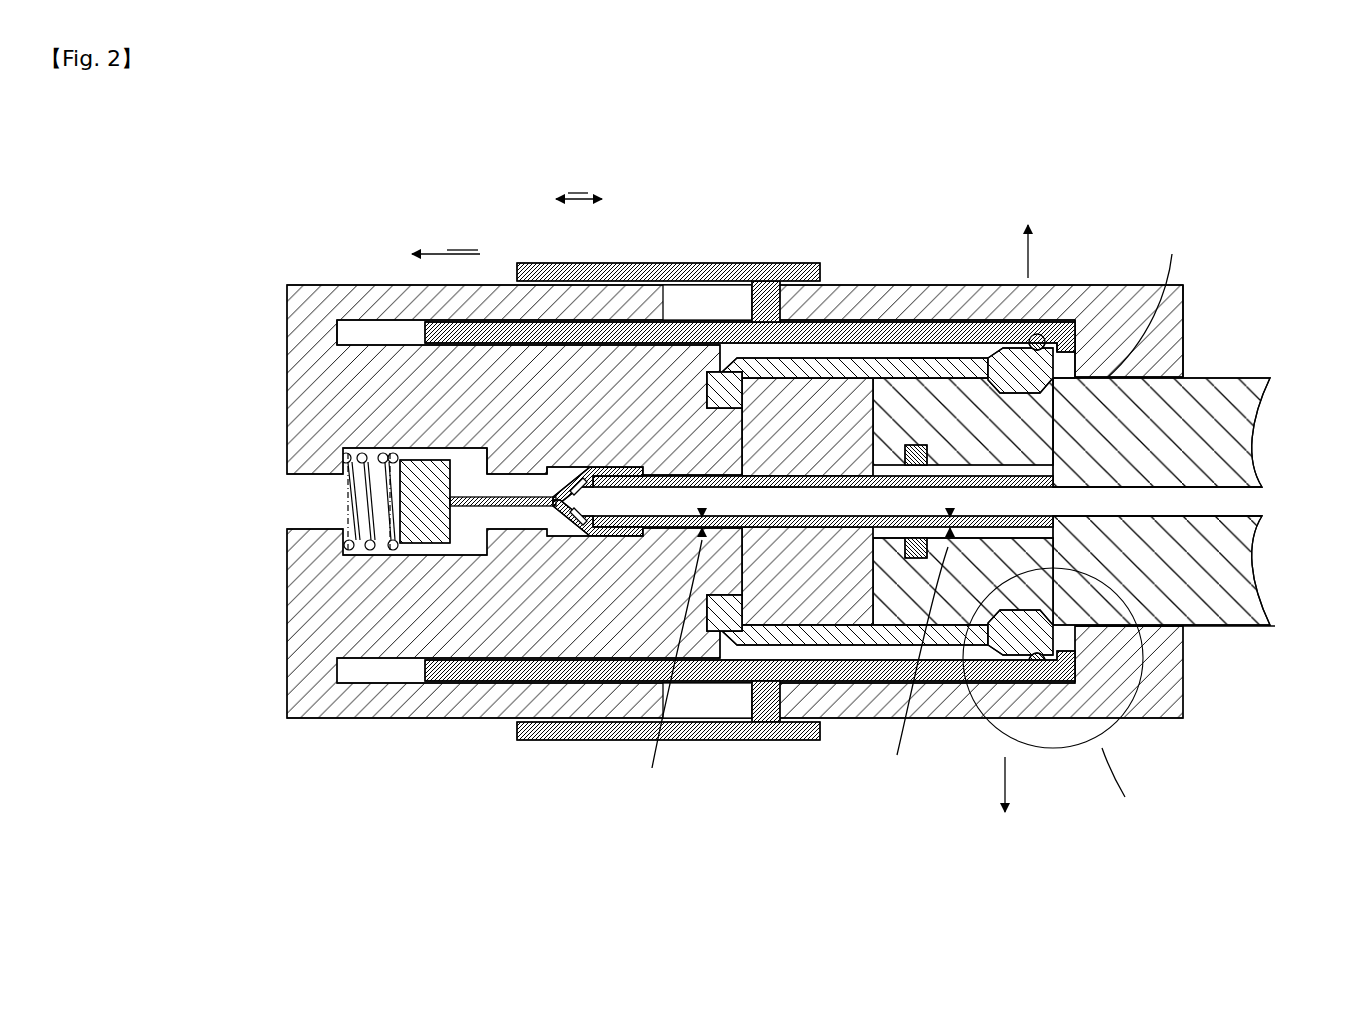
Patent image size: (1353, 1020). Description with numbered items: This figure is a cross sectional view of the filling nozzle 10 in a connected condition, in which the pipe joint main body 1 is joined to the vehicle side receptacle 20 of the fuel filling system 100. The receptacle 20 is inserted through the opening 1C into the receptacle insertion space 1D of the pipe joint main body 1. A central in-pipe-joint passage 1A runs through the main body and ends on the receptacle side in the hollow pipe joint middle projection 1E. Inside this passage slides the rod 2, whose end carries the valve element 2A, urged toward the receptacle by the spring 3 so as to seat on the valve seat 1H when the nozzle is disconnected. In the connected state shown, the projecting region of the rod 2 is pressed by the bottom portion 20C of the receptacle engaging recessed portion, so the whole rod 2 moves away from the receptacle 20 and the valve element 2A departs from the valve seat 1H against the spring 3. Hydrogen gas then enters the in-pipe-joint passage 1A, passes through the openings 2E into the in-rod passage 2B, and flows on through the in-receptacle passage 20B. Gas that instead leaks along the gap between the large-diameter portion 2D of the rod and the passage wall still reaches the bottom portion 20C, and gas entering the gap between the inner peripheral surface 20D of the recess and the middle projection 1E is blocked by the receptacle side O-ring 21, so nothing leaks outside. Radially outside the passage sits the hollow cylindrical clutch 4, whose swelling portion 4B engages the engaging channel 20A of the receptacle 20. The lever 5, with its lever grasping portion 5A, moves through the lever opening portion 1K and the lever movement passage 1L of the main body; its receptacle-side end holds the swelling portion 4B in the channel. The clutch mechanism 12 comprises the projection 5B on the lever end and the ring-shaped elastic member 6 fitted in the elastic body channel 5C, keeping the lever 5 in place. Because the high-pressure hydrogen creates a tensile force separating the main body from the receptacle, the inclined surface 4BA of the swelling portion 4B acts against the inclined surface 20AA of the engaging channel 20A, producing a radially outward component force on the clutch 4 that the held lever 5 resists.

The piping system 100 is at (1208, 227).
The filling nozzle 10 is at (346, 212).
The pipe joint main body 1 is at (724, 476).
The in-pipe-joint passage 1A is at (553, 483).
The opening 1C is at (1152, 378).
The receptacle insertion space 1D is at (1185, 580).
The pipe joint middle projection 1E is at (980, 470).
The valve seat 1H is at (487, 462).
The lever opening portion 1K is at (663, 302).
The lever movement passage 1L is at (387, 325).
The rod 2 is at (746, 528).
The valve element 2A is at (430, 506).
The in-rod passage 2B is at (796, 496).
The large-diameter portion 2D is at (760, 483).
The openings 2E is at (560, 490).
The spring 3 is at (345, 451).
The clutch 4 is at (838, 366).
The swelling portion 4B is at (1005, 347).
The inclined surface 4BA is at (927, 363).
The lever 5 is at (862, 332).
The lever grasping portion 5A is at (736, 266).
The projection 5B is at (1103, 330).
The elastic body channel 5C is at (1039, 333).
The ring-shaped elastic member 6 is at (1037, 337).
The clutch mechanism 12 is at (1015, 262).
The receptacle 20 is at (1230, 388).
The engaging channel 20A is at (1093, 355).
The inclined surface 20AA is at (1003, 360).
The in-receptacle passage 20B is at (1205, 500).
The bottom portion 20C is at (1055, 497).
The inner peripheral surface 20D is at (972, 540).
The receptacle side O-ring 21 is at (905, 560).